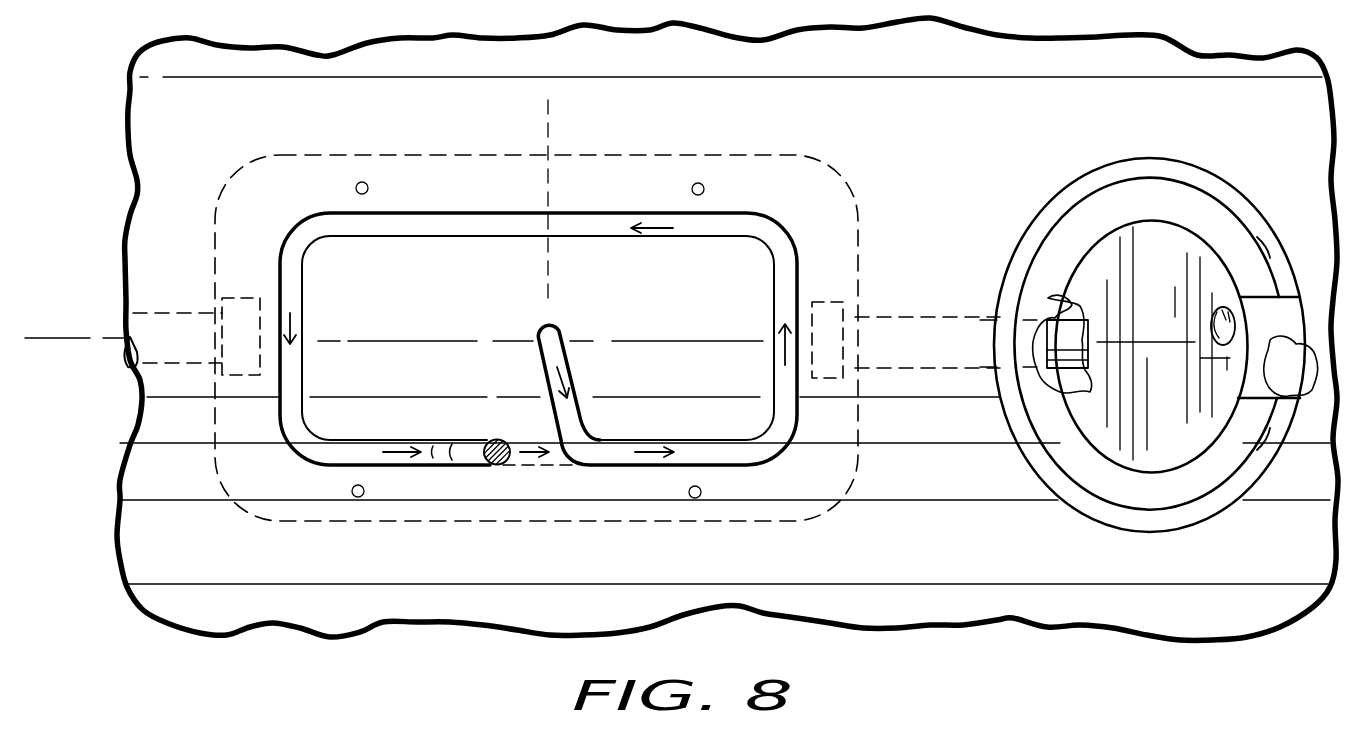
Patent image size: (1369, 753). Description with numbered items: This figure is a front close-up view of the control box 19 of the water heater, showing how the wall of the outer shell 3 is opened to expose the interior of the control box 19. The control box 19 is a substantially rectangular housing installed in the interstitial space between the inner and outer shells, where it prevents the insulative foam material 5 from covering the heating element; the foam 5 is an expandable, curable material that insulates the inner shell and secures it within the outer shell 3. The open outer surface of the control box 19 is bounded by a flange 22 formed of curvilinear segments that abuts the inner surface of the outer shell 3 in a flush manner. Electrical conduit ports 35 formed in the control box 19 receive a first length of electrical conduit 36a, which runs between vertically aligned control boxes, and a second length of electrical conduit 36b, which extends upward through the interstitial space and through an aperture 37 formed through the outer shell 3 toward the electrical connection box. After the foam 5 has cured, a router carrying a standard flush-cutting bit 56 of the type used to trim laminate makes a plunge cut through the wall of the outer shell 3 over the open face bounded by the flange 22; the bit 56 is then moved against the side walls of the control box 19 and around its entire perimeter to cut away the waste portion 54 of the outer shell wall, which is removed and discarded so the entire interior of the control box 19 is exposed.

The outer shell 3 is at (996, 131).
The insulative foam material 5 is at (1050, 298).
The control box 19 is at (474, 215).
The flange 22 is at (686, 157).
The electrical conduit ports 35 is at (235, 298).
The first length of electrical conduit 36a is at (163, 312).
The second length of electrical conduit 36b is at (945, 368).
The aperture 37 is at (1052, 392).
The waste portion 54 is at (437, 305).
The flush-cutting bit 56 is at (497, 463).